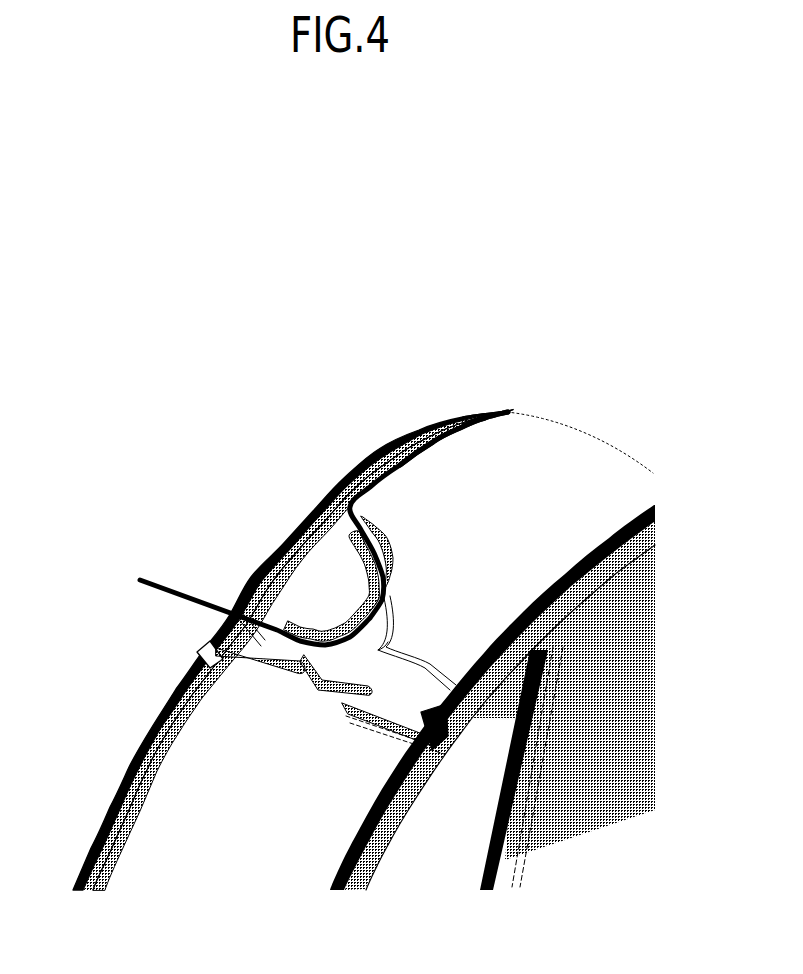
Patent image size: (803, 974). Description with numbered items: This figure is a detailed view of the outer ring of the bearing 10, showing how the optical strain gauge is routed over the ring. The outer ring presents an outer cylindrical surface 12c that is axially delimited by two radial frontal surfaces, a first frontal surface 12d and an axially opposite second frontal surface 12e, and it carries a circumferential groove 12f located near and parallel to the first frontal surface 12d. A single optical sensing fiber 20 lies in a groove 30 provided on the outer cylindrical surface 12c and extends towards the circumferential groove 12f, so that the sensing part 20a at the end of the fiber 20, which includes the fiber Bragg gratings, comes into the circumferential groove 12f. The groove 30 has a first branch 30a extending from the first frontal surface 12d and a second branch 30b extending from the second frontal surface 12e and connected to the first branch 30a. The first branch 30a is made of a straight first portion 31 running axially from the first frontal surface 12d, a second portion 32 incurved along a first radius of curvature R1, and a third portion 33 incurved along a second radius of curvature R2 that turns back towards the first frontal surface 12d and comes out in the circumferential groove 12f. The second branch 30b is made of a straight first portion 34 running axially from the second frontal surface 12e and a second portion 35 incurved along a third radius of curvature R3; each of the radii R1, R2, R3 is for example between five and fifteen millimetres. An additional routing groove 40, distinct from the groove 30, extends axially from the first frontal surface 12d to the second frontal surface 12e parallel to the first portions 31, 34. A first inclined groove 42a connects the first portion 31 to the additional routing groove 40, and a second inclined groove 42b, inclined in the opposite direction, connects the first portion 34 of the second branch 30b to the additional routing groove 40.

The bearing 10 is at (618, 424).
The outer cylindrical surface 12c is at (499, 470).
The first frontal surface 12d is at (140, 748).
The second frontal surface 12e is at (654, 551).
The circumferential groove 12f is at (322, 496).
The single optical sensing fiber 20 is at (188, 600).
The sensing part 20a is at (378, 456).
The groove 30 is at (210, 618).
The first branch 30a is at (299, 612).
The second branch 30b is at (425, 678).
The first portion 31 is at (245, 612).
The second portion 32 is at (322, 628).
The third portion 33 is at (340, 500).
The first portion 34 is at (436, 750).
The second portion 35 is at (393, 612).
The additional routing groove 40 is at (199, 650).
The first inclined groove 42a is at (296, 680).
The second inclined groove 42b is at (323, 692).
The first radius of curvature R1 is at (356, 599).
The second radius of curvature R2 is at (405, 511).
The third radius of curvature R3 is at (395, 644).